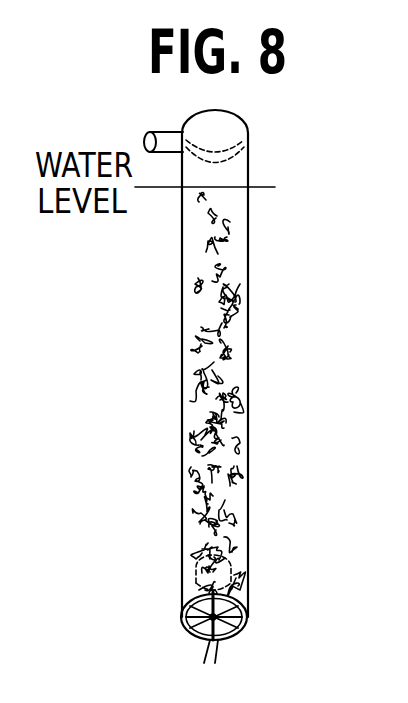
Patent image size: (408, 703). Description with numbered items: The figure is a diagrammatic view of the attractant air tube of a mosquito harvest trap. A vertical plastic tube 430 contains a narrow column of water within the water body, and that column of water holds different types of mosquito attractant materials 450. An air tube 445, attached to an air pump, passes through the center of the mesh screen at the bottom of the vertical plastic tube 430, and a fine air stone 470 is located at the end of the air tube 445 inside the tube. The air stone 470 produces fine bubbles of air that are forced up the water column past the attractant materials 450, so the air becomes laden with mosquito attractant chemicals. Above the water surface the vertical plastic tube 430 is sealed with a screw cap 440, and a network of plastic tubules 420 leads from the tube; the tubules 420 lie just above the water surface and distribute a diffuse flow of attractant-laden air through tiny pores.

The plastic tubules 420 is at (161, 127).
The vertical plastic tube 430 is at (250, 505).
The screw cap 440 is at (240, 116).
The air tube 445 is at (216, 673).
The mosquito attractant materials 450 is at (243, 358).
The fine air stone 470 is at (236, 578).